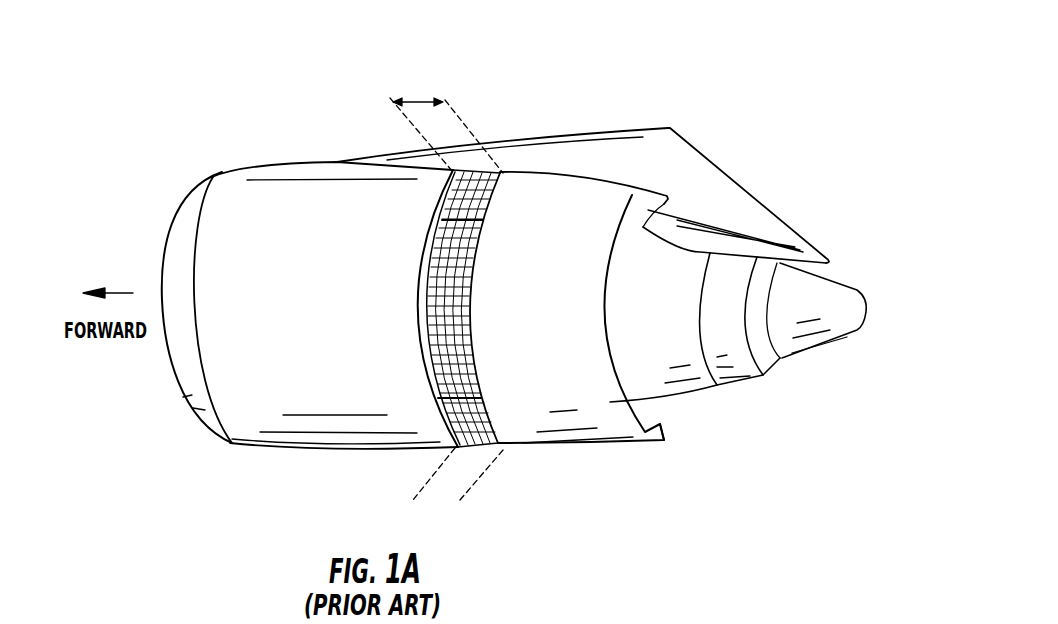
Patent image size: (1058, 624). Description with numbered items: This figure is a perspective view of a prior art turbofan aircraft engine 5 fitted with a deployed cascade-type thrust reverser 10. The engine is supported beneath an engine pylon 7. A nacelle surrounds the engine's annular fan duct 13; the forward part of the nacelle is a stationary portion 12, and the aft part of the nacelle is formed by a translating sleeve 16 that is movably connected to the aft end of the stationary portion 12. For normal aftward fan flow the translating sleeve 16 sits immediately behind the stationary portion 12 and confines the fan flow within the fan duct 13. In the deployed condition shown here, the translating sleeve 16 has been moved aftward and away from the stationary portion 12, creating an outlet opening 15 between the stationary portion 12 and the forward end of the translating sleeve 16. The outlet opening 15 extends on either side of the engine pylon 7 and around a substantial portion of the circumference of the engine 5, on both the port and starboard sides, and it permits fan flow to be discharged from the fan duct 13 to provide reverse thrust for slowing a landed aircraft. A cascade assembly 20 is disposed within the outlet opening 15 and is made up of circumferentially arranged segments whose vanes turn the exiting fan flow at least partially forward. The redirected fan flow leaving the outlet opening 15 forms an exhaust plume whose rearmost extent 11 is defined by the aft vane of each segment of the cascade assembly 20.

The turbofan aircraft engine 5 is at (260, 60).
The engine pylon 7 is at (623, 158).
The cascade-type thrust reverser 10 is at (552, 163).
The rearmost extent of the exhaust plume 11 is at (453, 110).
The stationary portion of the nacelle 12 is at (277, 197).
The annular fan duct 13 is at (660, 410).
The outlet opening 15 is at (472, 173).
The translating sleeve 16 is at (585, 450).
The cascade assembly 20 is at (483, 450).